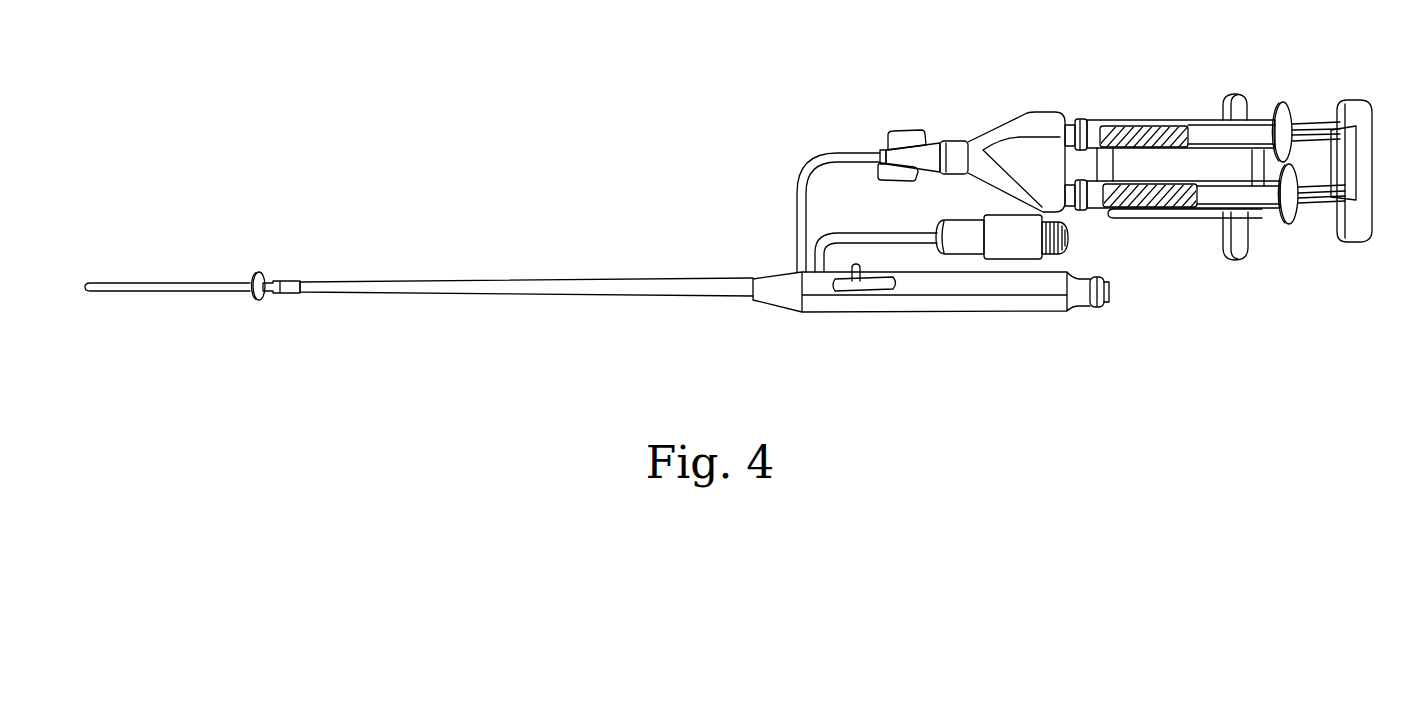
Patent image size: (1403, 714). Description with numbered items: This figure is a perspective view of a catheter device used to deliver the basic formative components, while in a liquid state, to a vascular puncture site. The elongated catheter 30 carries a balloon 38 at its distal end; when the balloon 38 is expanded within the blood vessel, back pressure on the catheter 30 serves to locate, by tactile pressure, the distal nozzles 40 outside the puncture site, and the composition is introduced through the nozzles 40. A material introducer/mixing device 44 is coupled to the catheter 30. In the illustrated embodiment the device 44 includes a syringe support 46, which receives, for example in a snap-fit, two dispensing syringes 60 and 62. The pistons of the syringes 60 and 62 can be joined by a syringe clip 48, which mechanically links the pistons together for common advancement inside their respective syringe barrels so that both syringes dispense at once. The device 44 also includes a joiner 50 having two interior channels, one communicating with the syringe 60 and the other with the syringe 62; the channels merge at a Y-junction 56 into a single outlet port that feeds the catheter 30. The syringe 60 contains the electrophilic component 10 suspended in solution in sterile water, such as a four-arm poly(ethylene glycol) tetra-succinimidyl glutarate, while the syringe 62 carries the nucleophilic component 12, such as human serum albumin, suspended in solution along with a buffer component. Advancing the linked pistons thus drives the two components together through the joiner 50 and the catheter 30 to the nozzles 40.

The electrophilic component 10 is at (1118, 123).
The nucleophilic component 12 is at (1148, 202).
The catheter 30 is at (494, 296).
The balloon 38 is at (258, 271).
The distal nozzles 40 is at (293, 294).
The material introducer/mixing device 44 is at (1166, 96).
The syringe support 46 is at (1237, 240).
The syringe clip 48 is at (1366, 149).
The joiner 50 is at (1023, 117).
The Y-junction 56 is at (957, 143).
The dispensing syringe 60 is at (1197, 118).
The dispensing syringe 62 is at (1211, 214).